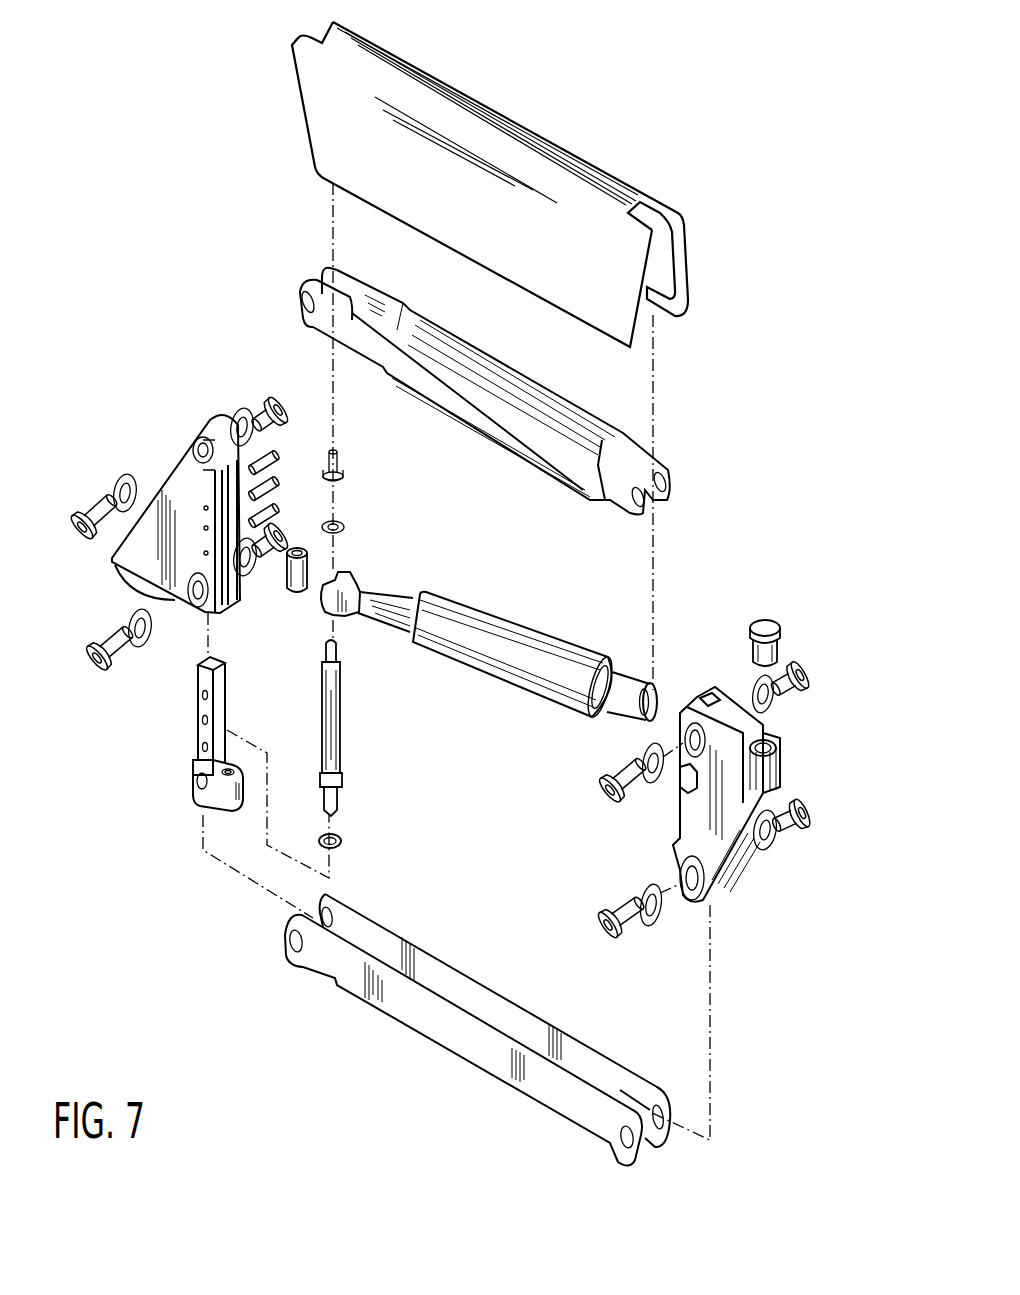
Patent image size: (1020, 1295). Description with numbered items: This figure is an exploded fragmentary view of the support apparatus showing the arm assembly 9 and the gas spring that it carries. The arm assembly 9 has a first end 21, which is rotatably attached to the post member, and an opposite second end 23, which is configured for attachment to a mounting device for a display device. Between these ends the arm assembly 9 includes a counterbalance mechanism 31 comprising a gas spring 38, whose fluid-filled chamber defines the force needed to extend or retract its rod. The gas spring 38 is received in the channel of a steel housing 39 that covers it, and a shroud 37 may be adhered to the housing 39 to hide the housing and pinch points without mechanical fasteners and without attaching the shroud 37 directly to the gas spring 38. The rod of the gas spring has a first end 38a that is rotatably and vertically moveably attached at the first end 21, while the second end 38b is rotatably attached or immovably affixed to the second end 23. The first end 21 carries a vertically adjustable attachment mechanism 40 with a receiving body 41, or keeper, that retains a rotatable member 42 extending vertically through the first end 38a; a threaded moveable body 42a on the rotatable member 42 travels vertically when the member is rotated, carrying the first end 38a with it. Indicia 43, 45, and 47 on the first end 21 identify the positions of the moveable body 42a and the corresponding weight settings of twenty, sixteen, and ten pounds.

The arm assembly 9 is at (241, 132).
The shroud 37 is at (530, 140).
The housing 39 is at (510, 382).
The counterbalance mechanism 31 is at (771, 480).
The indicia 47 is at (188, 507).
The indicia 45 is at (188, 527).
The indicia 43 is at (188, 553).
The first end of the arm assembly 21 is at (132, 558).
The vertically adjustable attachment mechanism 40 is at (158, 702).
The receiving body 41 is at (192, 784).
The moveable body 42a is at (290, 592).
The rotatable member 42 is at (343, 747).
The first end of the gas spring 38a is at (343, 610).
The gas spring 38 is at (488, 640).
The second end of the gas spring 38b is at (638, 678).
The second end of the arm assembly 23 is at (778, 778).